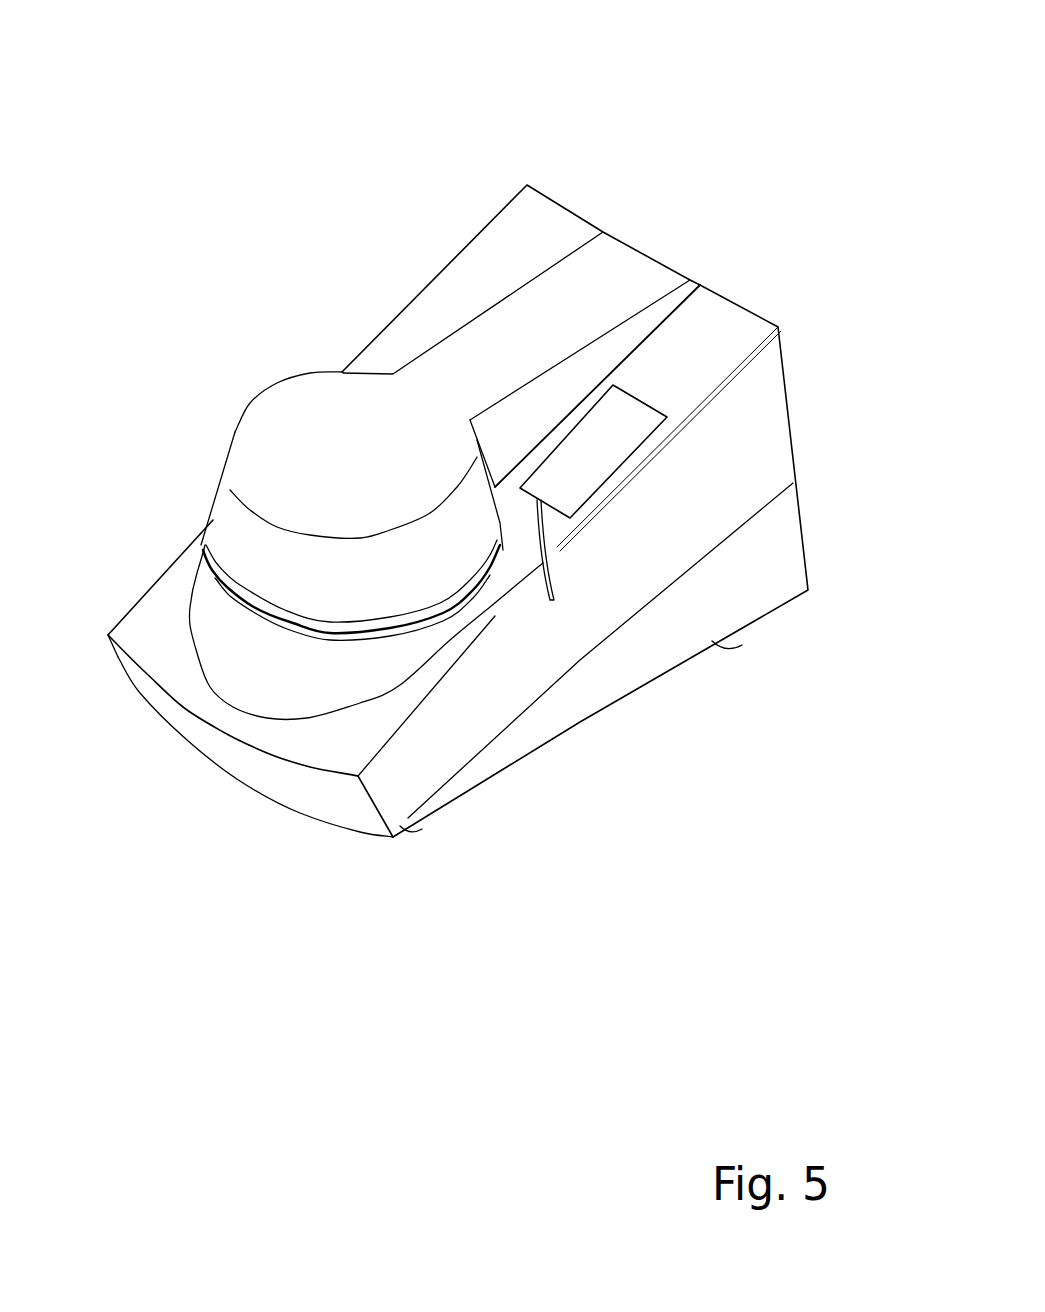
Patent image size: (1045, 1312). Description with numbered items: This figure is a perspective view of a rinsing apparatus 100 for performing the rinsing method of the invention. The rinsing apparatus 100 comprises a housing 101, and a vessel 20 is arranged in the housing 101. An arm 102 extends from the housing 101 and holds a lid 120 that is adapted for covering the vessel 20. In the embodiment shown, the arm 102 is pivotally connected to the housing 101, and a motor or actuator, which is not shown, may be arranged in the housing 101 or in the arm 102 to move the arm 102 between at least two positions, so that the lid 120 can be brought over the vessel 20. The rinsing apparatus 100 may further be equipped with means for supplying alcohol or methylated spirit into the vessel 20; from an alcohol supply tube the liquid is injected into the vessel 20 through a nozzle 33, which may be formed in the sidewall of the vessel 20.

The rinsing apparatus 100 is at (196, 92).
The housing 101 is at (743, 483).
The arm 102 is at (540, 403).
The vessel 20 is at (240, 568).
The lid 120 is at (257, 470).
The nozzle 33 is at (420, 593).